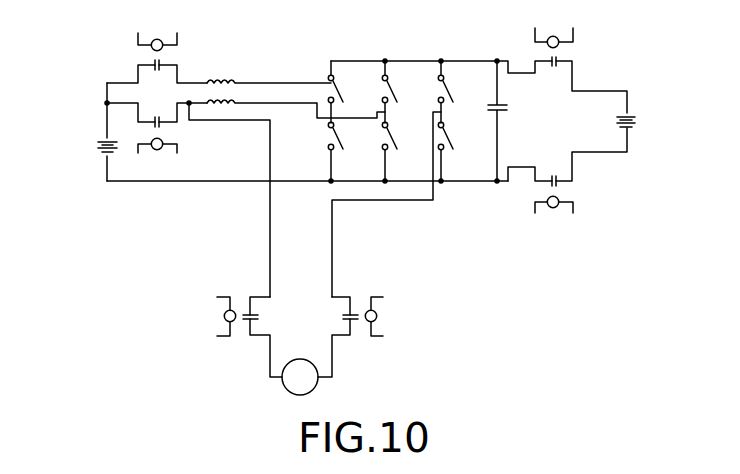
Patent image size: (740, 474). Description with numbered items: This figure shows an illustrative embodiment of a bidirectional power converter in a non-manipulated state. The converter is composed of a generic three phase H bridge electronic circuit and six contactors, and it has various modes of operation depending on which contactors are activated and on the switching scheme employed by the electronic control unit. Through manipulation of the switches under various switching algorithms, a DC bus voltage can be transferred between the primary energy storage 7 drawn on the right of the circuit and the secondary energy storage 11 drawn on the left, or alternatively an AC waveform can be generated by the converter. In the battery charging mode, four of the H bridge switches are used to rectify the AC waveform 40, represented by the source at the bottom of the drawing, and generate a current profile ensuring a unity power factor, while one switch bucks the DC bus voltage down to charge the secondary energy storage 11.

The secondary energy storage 11 is at (97, 171).
The primary energy storage 7 is at (643, 135).
The AC waveform 40 is at (283, 388).